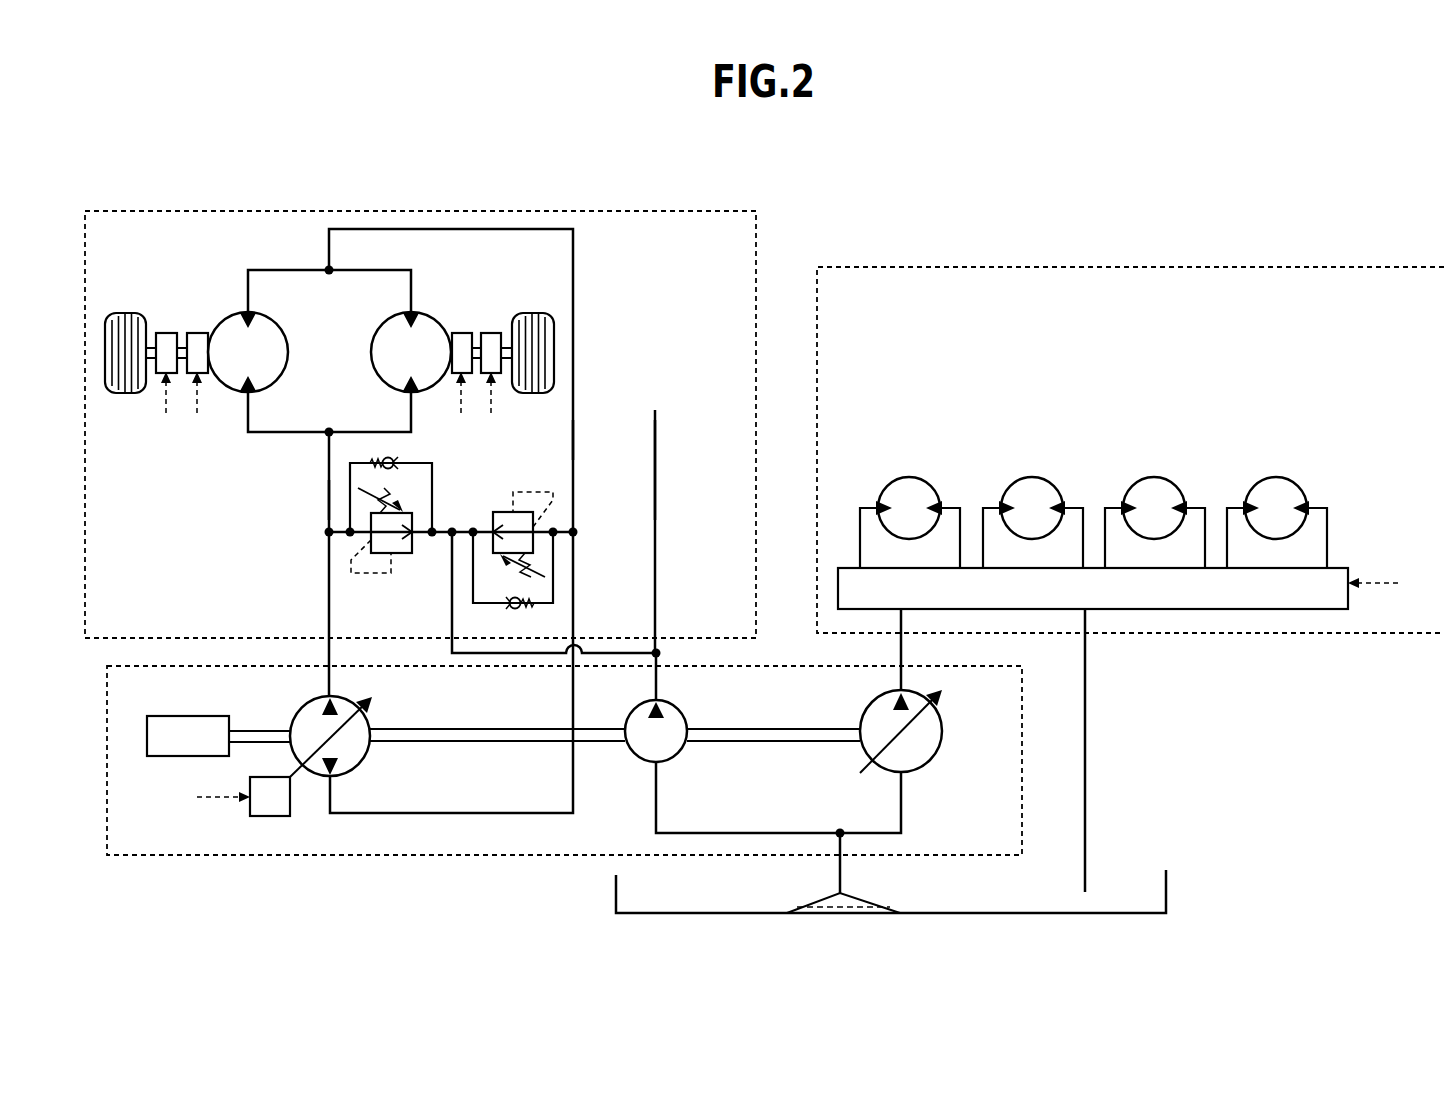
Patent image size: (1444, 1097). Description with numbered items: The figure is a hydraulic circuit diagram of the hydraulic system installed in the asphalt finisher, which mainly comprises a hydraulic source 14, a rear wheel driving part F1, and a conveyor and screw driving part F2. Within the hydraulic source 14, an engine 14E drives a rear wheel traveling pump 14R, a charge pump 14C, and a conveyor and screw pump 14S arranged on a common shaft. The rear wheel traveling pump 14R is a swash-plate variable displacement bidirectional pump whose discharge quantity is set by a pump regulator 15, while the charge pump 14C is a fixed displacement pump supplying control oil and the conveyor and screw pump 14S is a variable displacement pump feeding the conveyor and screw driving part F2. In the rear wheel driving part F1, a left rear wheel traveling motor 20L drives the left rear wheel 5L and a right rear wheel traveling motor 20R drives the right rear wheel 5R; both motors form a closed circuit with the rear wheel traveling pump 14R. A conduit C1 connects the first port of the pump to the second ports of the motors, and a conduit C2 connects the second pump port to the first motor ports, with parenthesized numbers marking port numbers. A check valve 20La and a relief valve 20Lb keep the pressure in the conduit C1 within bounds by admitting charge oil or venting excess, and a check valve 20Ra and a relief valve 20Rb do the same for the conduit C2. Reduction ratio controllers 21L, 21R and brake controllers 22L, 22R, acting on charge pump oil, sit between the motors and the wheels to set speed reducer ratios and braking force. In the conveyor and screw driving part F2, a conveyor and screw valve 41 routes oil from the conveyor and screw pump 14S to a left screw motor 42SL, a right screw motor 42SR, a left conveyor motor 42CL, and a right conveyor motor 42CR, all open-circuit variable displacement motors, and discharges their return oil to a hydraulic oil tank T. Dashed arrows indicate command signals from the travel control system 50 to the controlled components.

The rear wheel driving part F1 is at (200, 211).
The conveyor and screw driving part F2 is at (915, 267).
The hydraulic source 14 is at (197, 857).
The engine 14E is at (229, 722).
The rear wheel traveling pump 14R is at (371, 722).
The charge pump 14C is at (688, 720).
The conveyor and screw pump 14S is at (942, 722).
The pump regulator 15 is at (272, 820).
The left rear wheel 5L is at (123, 313).
The right rear wheel 5R is at (530, 313).
The reduction ratio controller 21L is at (197, 333).
The reduction ratio controller 21R is at (462, 333).
The brake controller 22L is at (165, 333).
The brake controller 22R is at (491, 333).
The left rear wheel traveling motor 20L is at (288, 352).
The right rear wheel traveling motor 20R is at (373, 342).
The check valve 20La is at (393, 458).
The relief valve 20Lb is at (402, 553).
The check valve 20Ra is at (517, 608).
The relief valve 20Rb is at (503, 512).
The conduit C1 is at (329, 500).
The conduit C2 is at (573, 435).
The travel control system 50 is at (799, 592).
The conveyor and screw valve 41 is at (1277, 609).
The left screw motor 42SL is at (930, 484).
The right screw motor 42SR is at (1053, 484).
The left conveyor motor 42CL is at (1175, 484).
The right conveyor motor 42CR is at (1297, 484).
The hydraulic oil tank T is at (1166, 885).